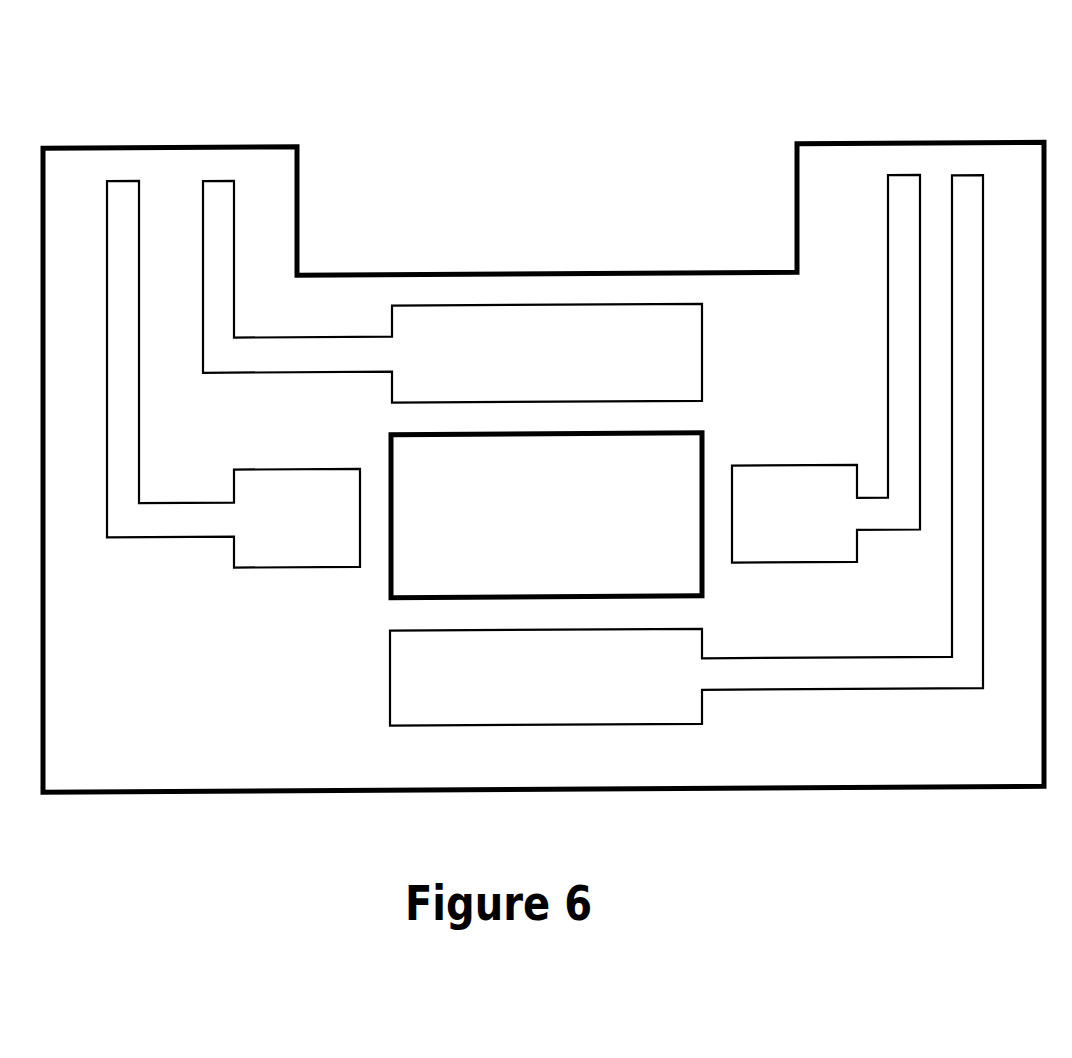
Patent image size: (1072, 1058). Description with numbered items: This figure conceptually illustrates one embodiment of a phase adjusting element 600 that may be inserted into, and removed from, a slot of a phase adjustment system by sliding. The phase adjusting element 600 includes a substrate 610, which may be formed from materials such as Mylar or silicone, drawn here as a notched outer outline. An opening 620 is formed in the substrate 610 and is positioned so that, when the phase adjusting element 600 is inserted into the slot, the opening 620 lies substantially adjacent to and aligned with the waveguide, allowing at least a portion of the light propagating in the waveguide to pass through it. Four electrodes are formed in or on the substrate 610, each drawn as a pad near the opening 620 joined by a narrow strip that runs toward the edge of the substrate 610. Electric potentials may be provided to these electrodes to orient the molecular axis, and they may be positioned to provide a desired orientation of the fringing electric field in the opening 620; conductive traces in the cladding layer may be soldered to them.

The phase adjusting element 600 is at (674, 86).
The substrate 610 is at (578, 275).
The opening 620 is at (445, 567).